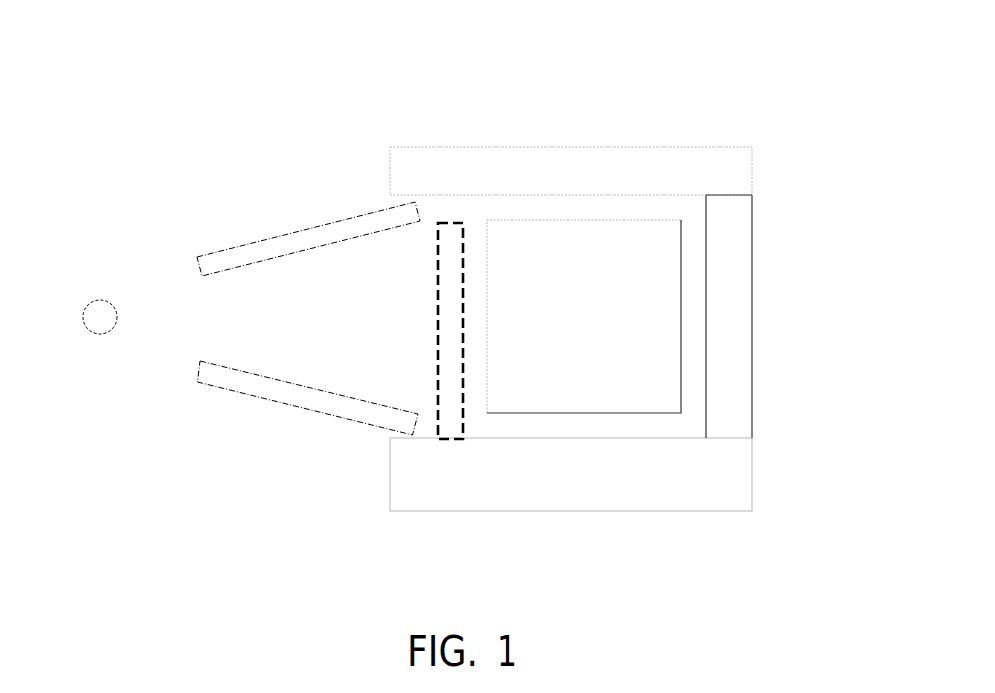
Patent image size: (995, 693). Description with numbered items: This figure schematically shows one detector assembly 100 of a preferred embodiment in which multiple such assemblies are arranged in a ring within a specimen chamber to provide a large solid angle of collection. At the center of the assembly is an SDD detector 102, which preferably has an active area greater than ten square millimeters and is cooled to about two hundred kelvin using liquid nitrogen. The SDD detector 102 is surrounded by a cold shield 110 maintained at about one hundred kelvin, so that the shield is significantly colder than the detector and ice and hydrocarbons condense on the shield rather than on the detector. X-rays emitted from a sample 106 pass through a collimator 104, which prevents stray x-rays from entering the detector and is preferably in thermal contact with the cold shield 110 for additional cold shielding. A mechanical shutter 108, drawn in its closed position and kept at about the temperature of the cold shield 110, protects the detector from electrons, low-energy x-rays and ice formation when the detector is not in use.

The detector assembly 100 is at (761, 50).
The SDD detector 102 is at (655, 316).
The collimator 104 is at (298, 310).
The sample 106 is at (83, 324).
The mechanical shutter 108 is at (415, 331).
The cold shield 110 is at (571, 357).